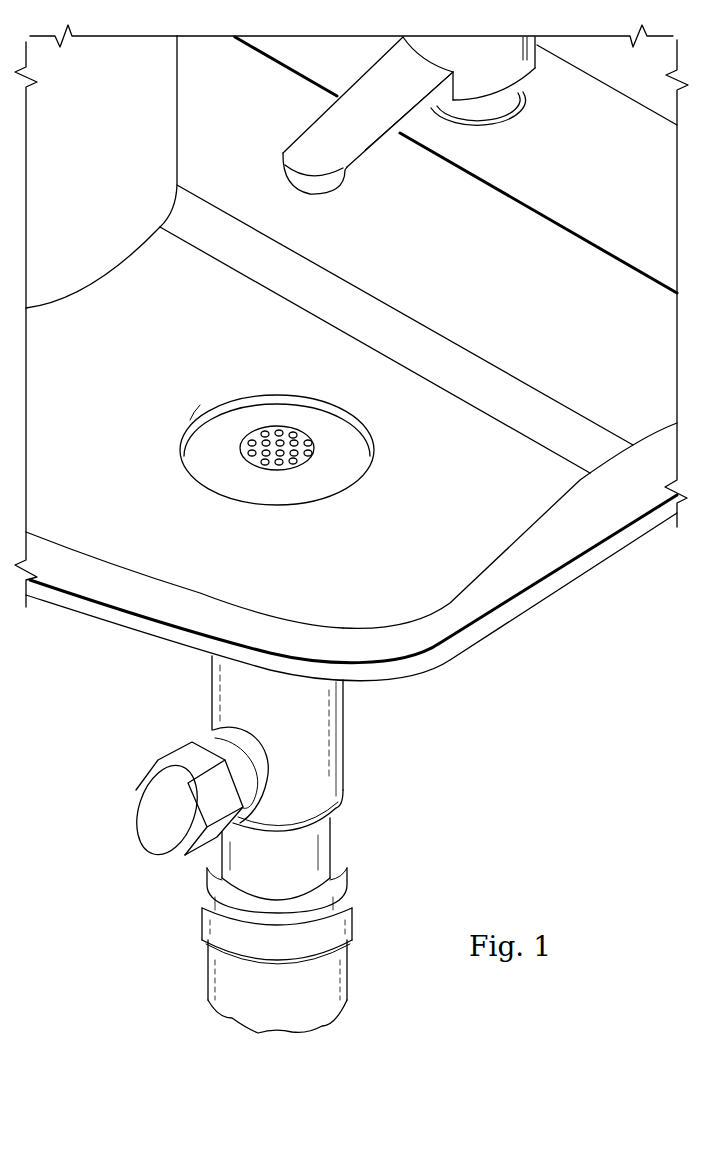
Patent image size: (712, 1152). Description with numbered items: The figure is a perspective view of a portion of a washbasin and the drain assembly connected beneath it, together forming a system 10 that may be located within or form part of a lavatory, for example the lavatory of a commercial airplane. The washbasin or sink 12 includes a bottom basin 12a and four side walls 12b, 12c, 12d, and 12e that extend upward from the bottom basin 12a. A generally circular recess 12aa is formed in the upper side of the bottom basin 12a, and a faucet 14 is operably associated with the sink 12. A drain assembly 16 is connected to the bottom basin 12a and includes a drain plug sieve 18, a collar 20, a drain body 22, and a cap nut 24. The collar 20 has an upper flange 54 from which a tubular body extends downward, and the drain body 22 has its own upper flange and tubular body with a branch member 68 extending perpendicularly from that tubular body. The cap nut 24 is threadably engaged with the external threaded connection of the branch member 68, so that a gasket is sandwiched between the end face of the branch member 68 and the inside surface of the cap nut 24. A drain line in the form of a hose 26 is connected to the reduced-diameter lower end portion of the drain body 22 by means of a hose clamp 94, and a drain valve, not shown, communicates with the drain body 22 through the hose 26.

The system 10 is at (522, 789).
The washbasin or sink 12 is at (535, 620).
The bottom basin 12a is at (372, 352).
The circular recess 12aa is at (193, 420).
The side wall 12b is at (167, 133).
The side wall 12c is at (547, 235).
The side wall 12d is at (518, 530).
The side wall 12e is at (197, 594).
The faucet 14 is at (316, 196).
The drain assembly 16 is at (344, 721).
The drain plug sieve 18 is at (284, 422).
The collar 20 is at (340, 478).
The drain body 22 is at (346, 766).
The cap nut 24 is at (157, 826).
The hose 26 is at (350, 975).
The upper flange 54 is at (358, 440).
The branch member 68 is at (240, 765).
The hose clamp 94 is at (353, 928).